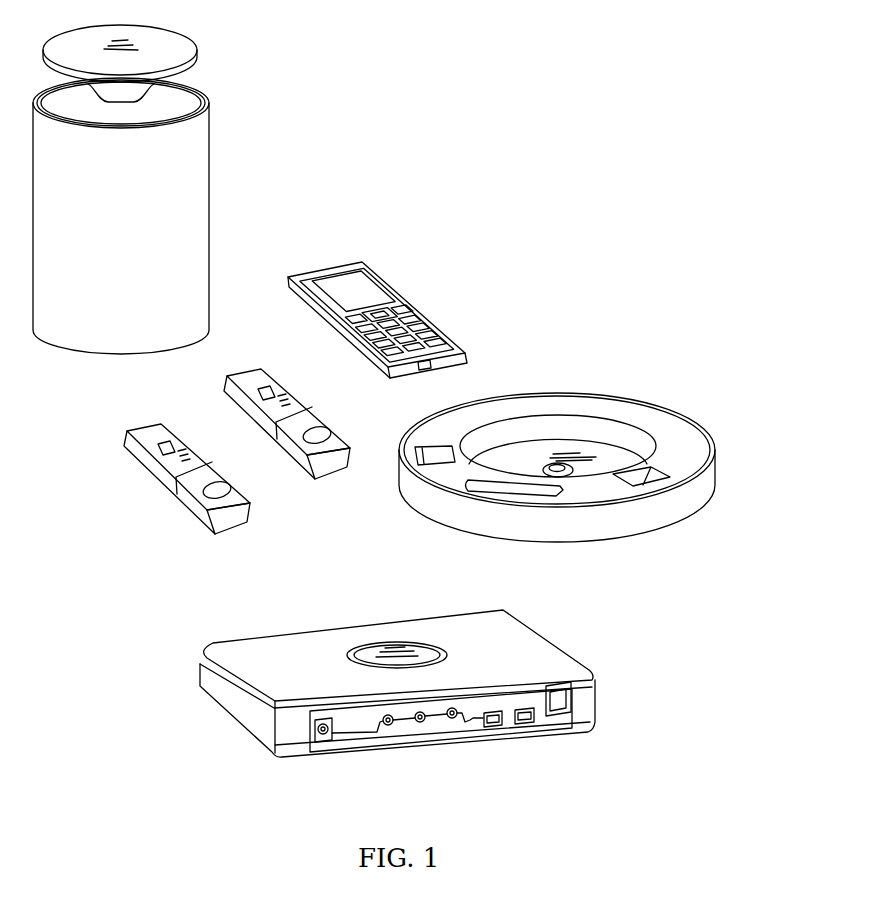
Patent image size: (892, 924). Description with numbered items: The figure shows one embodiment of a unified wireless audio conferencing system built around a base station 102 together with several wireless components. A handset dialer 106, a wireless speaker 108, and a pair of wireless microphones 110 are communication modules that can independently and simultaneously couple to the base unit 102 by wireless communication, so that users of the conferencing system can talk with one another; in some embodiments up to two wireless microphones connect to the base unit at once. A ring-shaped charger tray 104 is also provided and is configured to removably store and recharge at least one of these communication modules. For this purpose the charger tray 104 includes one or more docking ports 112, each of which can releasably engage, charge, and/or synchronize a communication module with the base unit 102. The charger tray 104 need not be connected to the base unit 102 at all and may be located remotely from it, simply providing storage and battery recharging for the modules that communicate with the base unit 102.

The base station 102 is at (566, 650).
The charger tray 104 is at (587, 467).
The handset dialer 106 is at (427, 313).
The wireless speaker 108 is at (198, 167).
The wireless microphone 110 is at (317, 481).
The docking port 112 is at (643, 467).